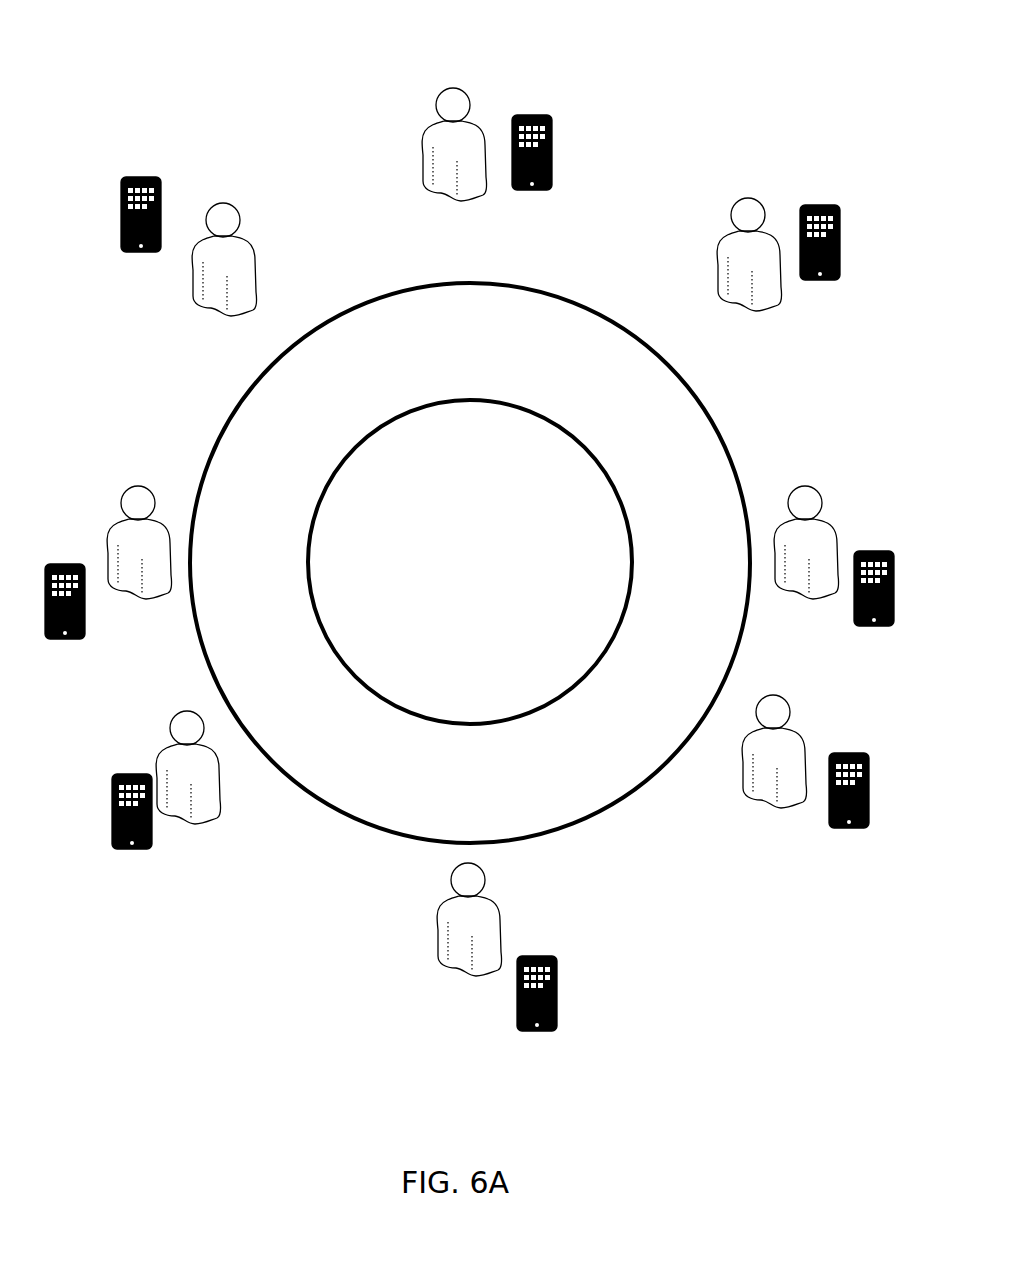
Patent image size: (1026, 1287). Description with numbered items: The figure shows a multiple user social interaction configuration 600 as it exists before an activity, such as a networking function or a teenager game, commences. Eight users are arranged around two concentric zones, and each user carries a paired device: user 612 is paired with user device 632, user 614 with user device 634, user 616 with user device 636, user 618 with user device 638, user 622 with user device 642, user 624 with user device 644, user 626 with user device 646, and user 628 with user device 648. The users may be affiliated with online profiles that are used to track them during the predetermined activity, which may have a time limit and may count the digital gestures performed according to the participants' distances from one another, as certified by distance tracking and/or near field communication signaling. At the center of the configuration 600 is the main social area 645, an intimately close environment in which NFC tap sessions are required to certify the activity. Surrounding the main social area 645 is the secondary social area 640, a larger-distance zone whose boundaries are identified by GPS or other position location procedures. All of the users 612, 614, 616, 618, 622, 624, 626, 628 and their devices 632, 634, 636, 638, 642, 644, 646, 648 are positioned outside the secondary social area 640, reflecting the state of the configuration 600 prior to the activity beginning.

The multiple user social interaction configuration 600 is at (90, 28).
The user 612 is at (454, 173).
The user 614 is at (743, 285).
The user 616 is at (805, 568).
The user 618 is at (768, 776).
The user 622 is at (468, 949).
The user 624 is at (197, 795).
The user 626 is at (139, 573).
The user 628 is at (224, 286).
The user device 632 is at (533, 192).
The user device 634 is at (825, 288).
The user device 636 is at (875, 632).
The user device 638 is at (848, 834).
The secondary social area 640 is at (470, 563).
The user device 642 is at (533, 1036).
The user device 644 is at (132, 853).
The main social area 645 is at (470, 562).
The user device 646 is at (65, 648).
The user device 648 is at (140, 257).